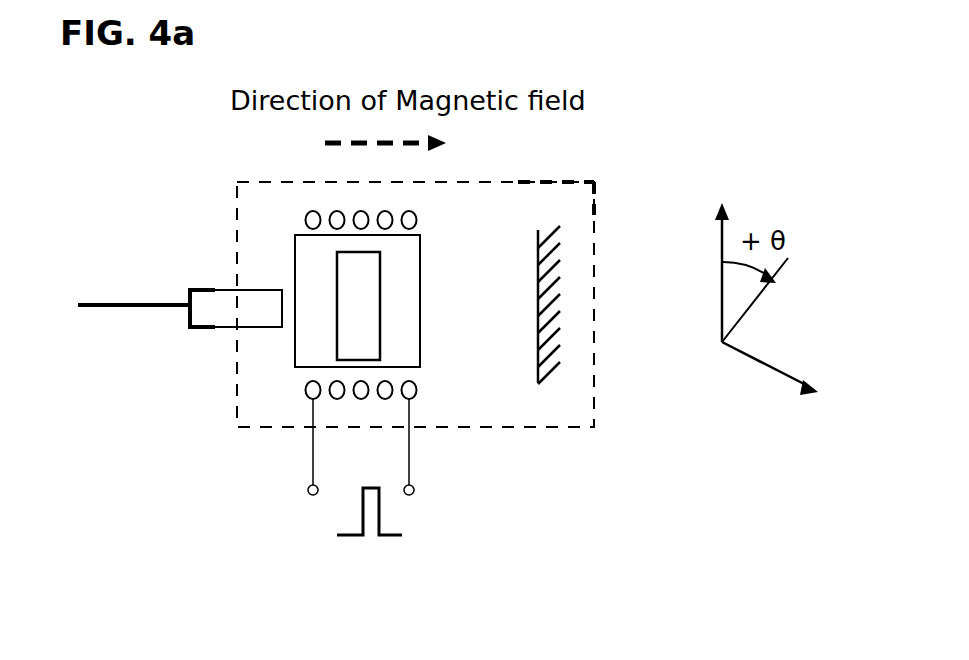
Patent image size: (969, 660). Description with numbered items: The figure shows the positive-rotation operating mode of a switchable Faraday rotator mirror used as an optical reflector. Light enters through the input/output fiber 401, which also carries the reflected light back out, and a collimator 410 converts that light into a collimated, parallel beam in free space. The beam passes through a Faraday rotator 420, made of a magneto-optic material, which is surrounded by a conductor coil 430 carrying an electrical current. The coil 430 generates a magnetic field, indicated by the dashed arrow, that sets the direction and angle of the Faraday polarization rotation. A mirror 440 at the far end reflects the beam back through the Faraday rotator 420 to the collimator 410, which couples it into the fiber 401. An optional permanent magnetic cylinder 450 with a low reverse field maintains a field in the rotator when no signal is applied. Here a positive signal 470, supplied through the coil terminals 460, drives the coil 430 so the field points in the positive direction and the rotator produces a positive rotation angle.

The input/output fiber 401 is at (123, 305).
The collimator 410 is at (215, 290).
The Faraday rotator 420 is at (420, 242).
The conductor coil 430 is at (313, 211).
The mirror 440 is at (538, 383).
The permanent magnetic cylinder 450 is at (295, 365).
The coil terminals 460 is at (409, 452).
The positive signal 470 is at (337, 535).